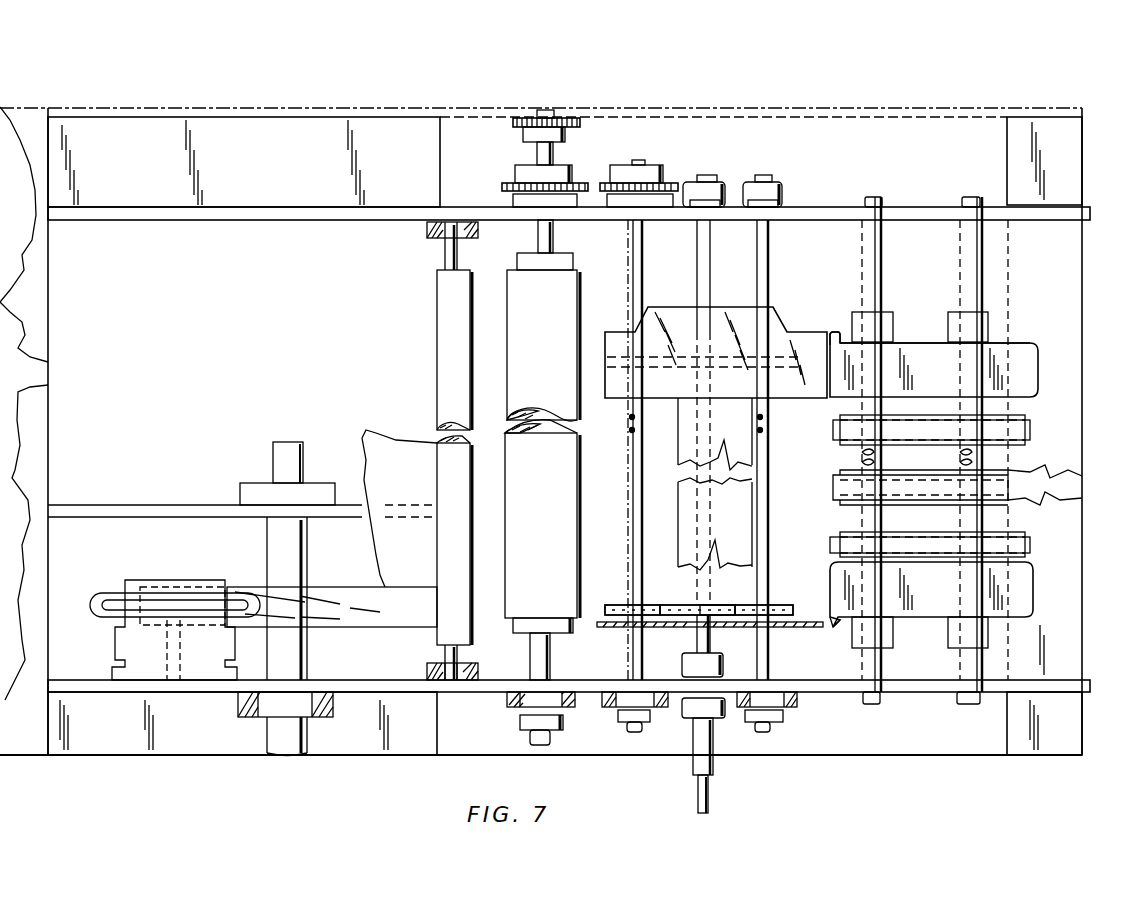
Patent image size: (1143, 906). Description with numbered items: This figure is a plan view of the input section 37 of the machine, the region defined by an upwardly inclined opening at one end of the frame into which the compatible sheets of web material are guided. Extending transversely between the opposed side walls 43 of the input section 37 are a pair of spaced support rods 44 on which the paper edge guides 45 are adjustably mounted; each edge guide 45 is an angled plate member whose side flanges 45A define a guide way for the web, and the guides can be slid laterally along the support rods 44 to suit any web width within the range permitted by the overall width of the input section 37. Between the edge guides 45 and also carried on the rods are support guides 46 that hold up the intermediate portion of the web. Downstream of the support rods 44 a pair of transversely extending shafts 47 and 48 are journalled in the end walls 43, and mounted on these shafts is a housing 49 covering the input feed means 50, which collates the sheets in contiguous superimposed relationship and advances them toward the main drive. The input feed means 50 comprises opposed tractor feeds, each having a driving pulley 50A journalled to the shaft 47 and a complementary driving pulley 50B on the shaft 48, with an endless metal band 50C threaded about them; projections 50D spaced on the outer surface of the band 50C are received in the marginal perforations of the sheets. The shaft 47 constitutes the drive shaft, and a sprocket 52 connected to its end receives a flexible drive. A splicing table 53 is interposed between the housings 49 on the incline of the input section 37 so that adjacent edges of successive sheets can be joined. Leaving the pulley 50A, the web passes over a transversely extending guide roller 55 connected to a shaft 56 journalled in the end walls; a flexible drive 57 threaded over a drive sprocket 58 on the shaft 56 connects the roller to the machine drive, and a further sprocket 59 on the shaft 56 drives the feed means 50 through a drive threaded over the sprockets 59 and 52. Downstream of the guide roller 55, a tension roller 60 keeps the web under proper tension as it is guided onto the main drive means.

The input section 37 is at (775, 90).
The side walls 43 is at (908, 207).
The support rods 44 is at (882, 268).
The paper edge guides 45 is at (1030, 370).
The side flanges 45A is at (1000, 343).
The plates 46 is at (1012, 425).
The shaft 47 is at (636, 452).
The shaft 48 is at (762, 536).
The housing 49 is at (807, 352).
The input feed means 50 is at (768, 305).
The driving pulley 50A is at (652, 350).
The driving pulley 50B is at (772, 605).
The metal band 50C is at (720, 605).
The projections 50D is at (618, 605).
The sprocket 52 is at (672, 183).
The splicing table 53 is at (742, 507).
The guide roller 55 is at (565, 297).
The shaft 56 is at (553, 240).
The flexible drive 57 is at (488, 118).
The drive sprocket 58 is at (572, 118).
The sprocket 59 is at (582, 183).
The tension roller 60 is at (445, 360).